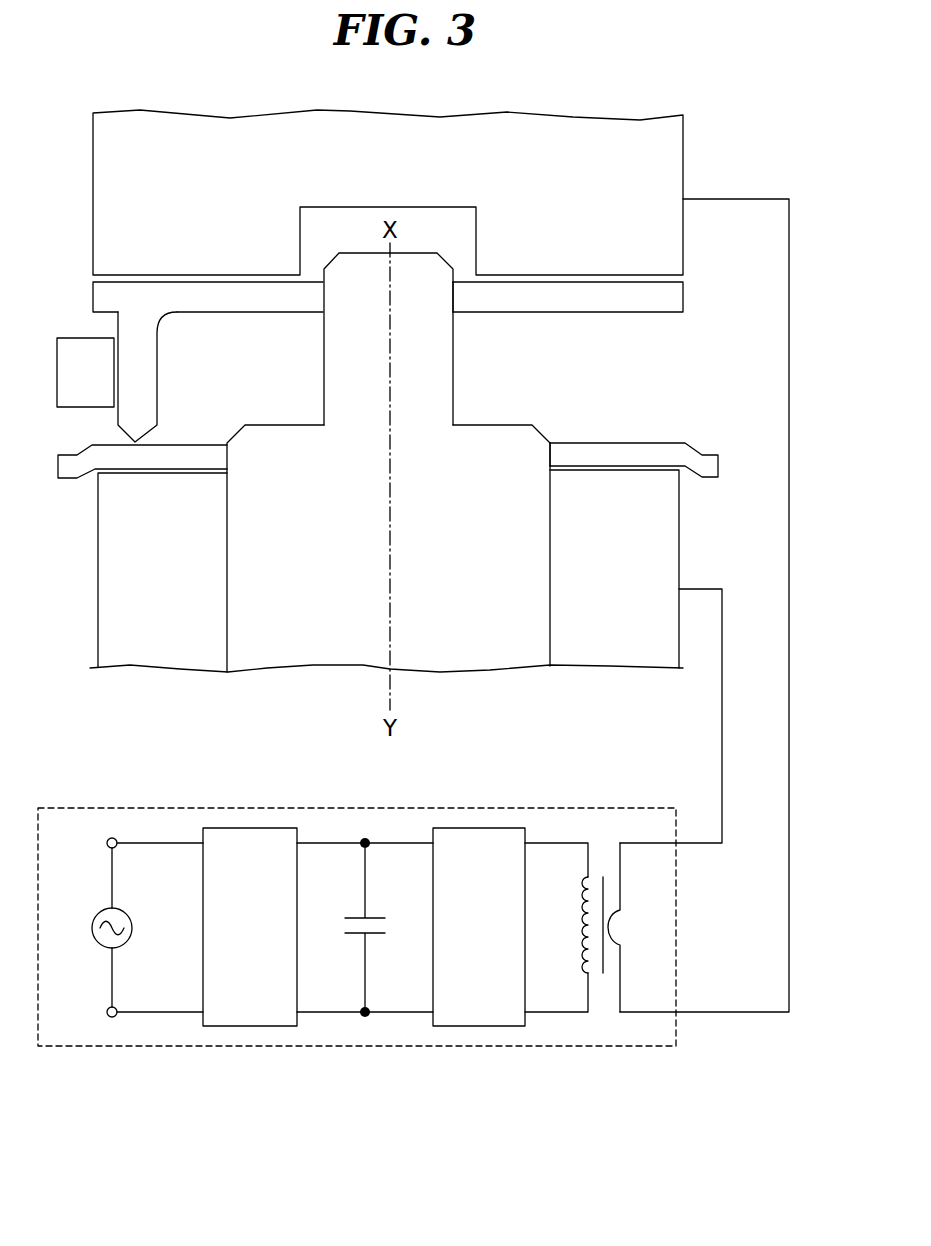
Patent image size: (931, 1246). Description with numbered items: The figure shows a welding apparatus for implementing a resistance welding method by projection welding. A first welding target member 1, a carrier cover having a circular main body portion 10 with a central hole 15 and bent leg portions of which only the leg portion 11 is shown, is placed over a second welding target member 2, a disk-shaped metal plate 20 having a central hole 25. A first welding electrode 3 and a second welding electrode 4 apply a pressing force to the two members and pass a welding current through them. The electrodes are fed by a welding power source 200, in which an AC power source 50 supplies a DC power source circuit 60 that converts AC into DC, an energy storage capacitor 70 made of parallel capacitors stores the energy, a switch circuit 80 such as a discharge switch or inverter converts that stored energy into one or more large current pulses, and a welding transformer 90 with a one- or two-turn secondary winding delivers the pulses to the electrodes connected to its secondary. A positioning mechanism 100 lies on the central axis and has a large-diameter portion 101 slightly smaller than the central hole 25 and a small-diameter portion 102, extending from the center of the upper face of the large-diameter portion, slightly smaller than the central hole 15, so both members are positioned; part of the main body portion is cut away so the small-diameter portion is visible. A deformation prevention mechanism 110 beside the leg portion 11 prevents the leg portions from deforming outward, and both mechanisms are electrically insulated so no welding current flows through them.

The first welding target member 1 is at (427, 276).
The second welding target member 2 is at (397, 522).
The first welding electrode 3 is at (683, 137).
The second welding electrode 4 is at (680, 527).
The main body portion 10 is at (388, 362).
The leg portion 11 is at (147, 373).
The central hole 15 is at (453, 295).
The lower conductive plate 20 is at (613, 443).
The central hole 25 is at (553, 457).
The AC power source 50 is at (98, 944).
The DC power source circuit 60 is at (250, 1027).
The energy storage capacitor 70 is at (380, 940).
The switch circuit 80 is at (480, 1027).
The welding transformer 90 is at (603, 985).
The positioning mechanism 100 is at (386, 504).
The large-diameter portion 101 is at (538, 560).
The small-diameter portion 102 is at (325, 370).
The deformation prevention mechanism 110 is at (68, 337).
The welding power source 200 is at (75, 806).